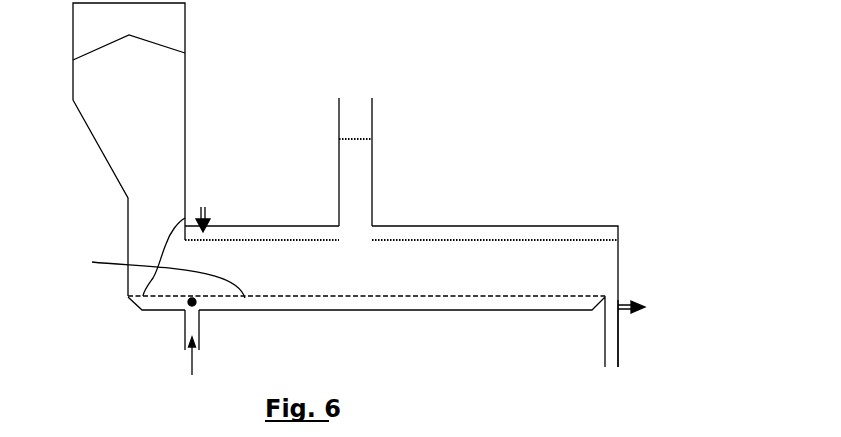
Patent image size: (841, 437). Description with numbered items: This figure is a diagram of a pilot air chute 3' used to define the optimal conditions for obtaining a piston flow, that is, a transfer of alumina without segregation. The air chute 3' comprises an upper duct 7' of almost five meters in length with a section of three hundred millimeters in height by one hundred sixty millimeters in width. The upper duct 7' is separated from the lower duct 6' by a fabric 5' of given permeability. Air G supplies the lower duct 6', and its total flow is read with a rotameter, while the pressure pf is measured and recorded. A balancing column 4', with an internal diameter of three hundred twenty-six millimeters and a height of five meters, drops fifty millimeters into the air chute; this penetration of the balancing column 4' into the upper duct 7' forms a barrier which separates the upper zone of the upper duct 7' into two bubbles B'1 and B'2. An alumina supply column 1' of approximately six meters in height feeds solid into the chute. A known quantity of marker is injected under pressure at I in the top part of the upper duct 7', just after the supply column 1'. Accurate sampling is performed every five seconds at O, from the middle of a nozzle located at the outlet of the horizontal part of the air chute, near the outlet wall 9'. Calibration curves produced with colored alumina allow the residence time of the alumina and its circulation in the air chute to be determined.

The alumina supply column 1' is at (115, 149).
The air chute 3' is at (401, 229).
The balancing column 4' is at (327, 162).
The fabric 5' is at (159, 274).
The lower duct 6' is at (366, 339).
The upper duct 7' is at (366, 315).
The outlet wall 9' is at (643, 333).
The first bubble B'1 is at (262, 211).
The second bubble B'2 is at (494, 203).
The marker injection point I is at (203, 208).
The sampling point O is at (637, 296).
The air G is at (185, 343).
The pressure pf is at (188, 305).